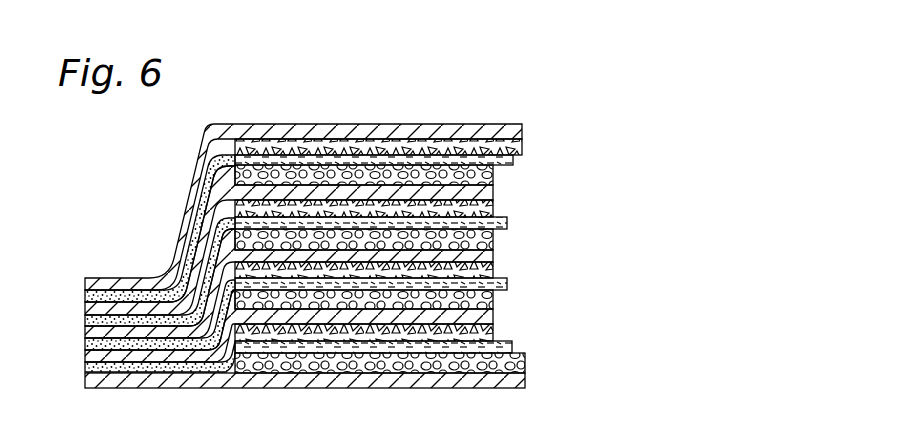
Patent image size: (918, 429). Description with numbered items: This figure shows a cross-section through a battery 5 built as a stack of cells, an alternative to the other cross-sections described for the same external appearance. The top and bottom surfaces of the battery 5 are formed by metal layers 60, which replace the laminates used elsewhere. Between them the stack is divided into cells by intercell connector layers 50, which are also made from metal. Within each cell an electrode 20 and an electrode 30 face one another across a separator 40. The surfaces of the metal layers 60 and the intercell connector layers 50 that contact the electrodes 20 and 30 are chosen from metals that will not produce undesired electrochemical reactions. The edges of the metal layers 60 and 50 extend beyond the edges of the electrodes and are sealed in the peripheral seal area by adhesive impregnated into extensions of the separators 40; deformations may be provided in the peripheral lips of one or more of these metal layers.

The battery 5 is at (329, 118).
The electrode 20 is at (523, 149).
The electrode 30 is at (493, 179).
The separator 40 is at (513, 163).
The intercell connector layer 50 is at (493, 193).
The metal layer 60 is at (450, 134).